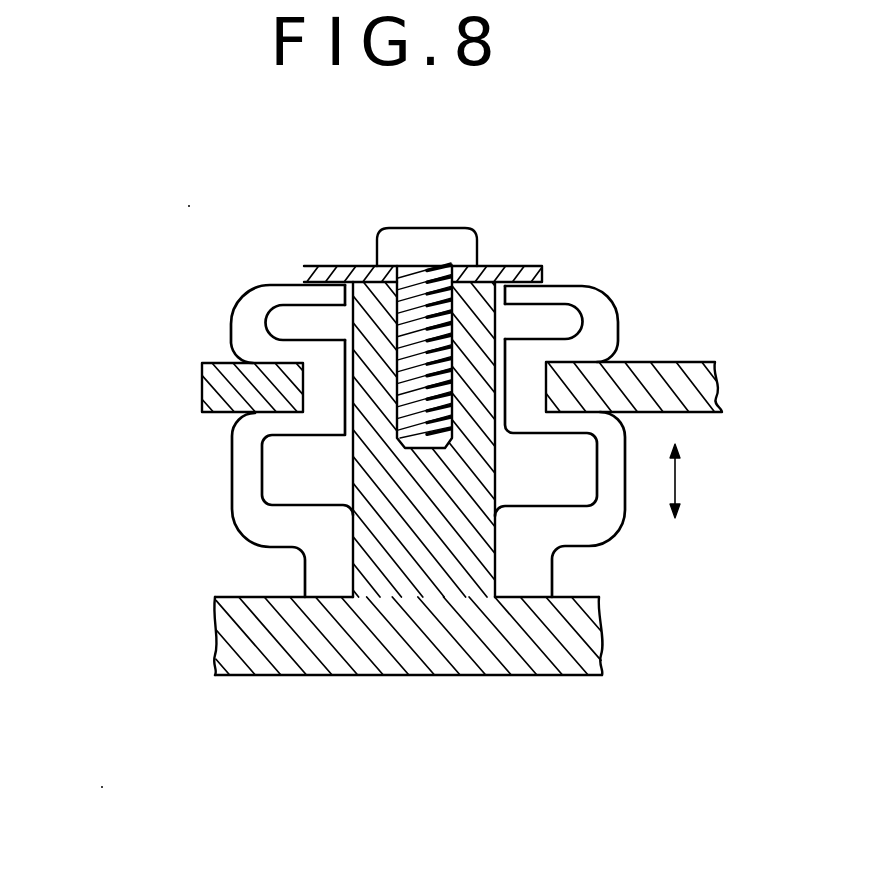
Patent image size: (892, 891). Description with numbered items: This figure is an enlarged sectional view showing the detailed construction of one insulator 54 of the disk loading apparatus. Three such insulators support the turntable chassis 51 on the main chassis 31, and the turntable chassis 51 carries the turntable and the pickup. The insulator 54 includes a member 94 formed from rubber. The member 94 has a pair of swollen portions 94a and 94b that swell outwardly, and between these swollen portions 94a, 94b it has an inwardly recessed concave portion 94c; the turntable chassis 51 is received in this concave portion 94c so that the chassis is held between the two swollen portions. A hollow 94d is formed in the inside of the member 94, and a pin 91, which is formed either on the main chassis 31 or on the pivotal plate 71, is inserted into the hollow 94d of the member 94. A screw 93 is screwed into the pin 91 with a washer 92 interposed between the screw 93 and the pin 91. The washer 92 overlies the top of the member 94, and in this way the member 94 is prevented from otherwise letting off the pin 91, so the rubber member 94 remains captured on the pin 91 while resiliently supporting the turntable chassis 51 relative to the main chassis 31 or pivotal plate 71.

The main chassis 31 is at (278, 663).
The pivotal plate 71 is at (408, 695).
The turntable chassis 51 is at (681, 367).
The insulator 54 is at (224, 561).
The pin 91 is at (472, 559).
The washer 92 is at (315, 265).
The screw 93 is at (433, 236).
The member 94 is at (123, 288).
The swollen portion 94a is at (310, 488).
The swollen portion 94b is at (232, 319).
The concave portion 94c is at (280, 414).
The hollow 94d is at (262, 500).